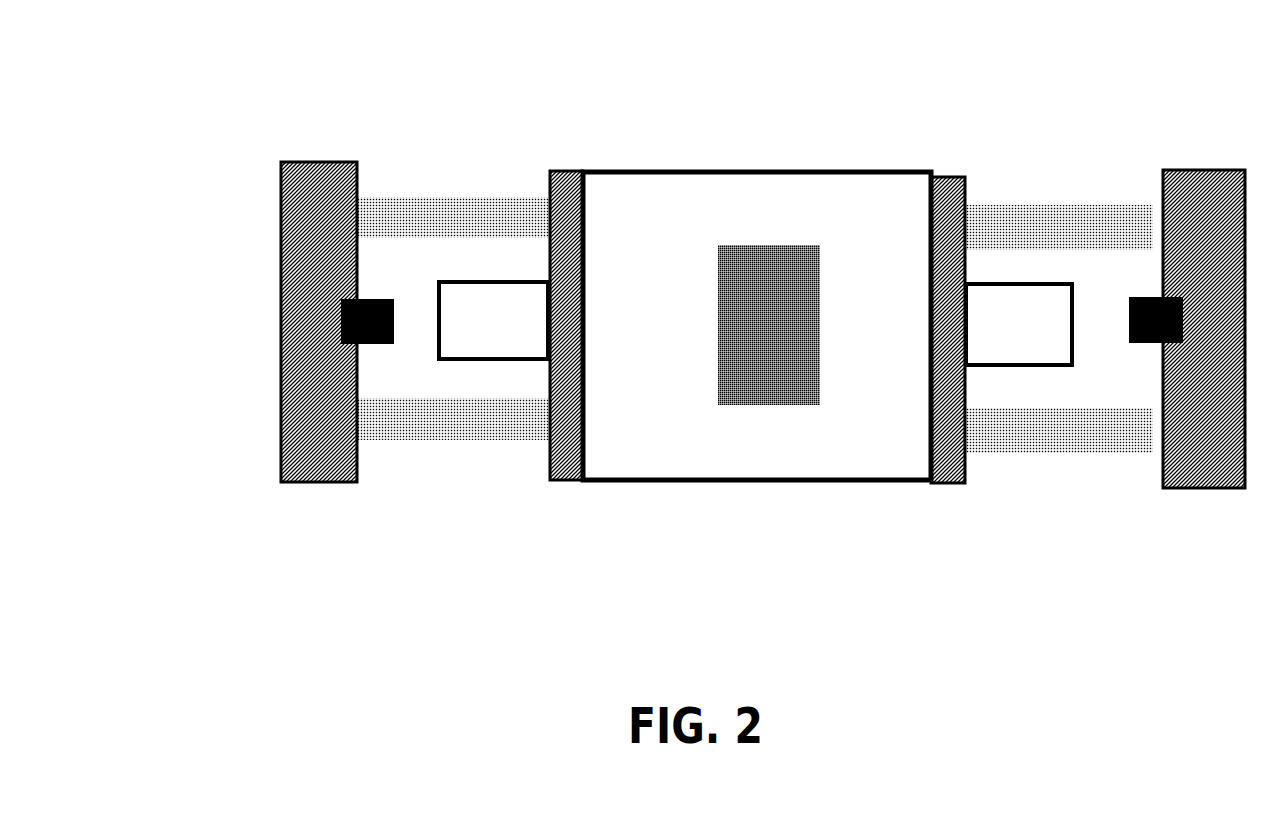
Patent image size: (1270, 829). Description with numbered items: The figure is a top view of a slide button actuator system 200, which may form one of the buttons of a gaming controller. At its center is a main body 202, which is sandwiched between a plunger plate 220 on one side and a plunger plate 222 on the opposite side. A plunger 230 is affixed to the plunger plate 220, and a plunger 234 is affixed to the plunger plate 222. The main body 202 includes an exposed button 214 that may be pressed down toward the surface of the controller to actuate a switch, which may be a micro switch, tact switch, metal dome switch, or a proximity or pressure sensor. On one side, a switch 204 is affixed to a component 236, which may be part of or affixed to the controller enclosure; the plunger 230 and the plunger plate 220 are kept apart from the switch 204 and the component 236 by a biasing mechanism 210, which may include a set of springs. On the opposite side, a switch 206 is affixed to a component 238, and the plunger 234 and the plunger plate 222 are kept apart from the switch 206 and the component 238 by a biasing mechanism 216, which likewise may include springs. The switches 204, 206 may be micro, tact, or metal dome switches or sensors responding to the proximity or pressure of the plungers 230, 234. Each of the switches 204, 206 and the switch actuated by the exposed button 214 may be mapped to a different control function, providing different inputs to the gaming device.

The slide button actuator system 200 is at (156, 70).
The main body 202 is at (858, 171).
The switch 204 is at (366, 298).
The switch 206 is at (1140, 297).
The biasing mechanism 210 is at (425, 232).
The exposed button 214 is at (797, 245).
The biasing mechanism 216 is at (1098, 238).
The plunger plate 220 is at (566, 481).
The plunger plate 222 is at (950, 483).
The plunger 230 is at (490, 281).
The plunger 234 is at (1005, 282).
The component 236 is at (298, 164).
The component 238 is at (1218, 171).